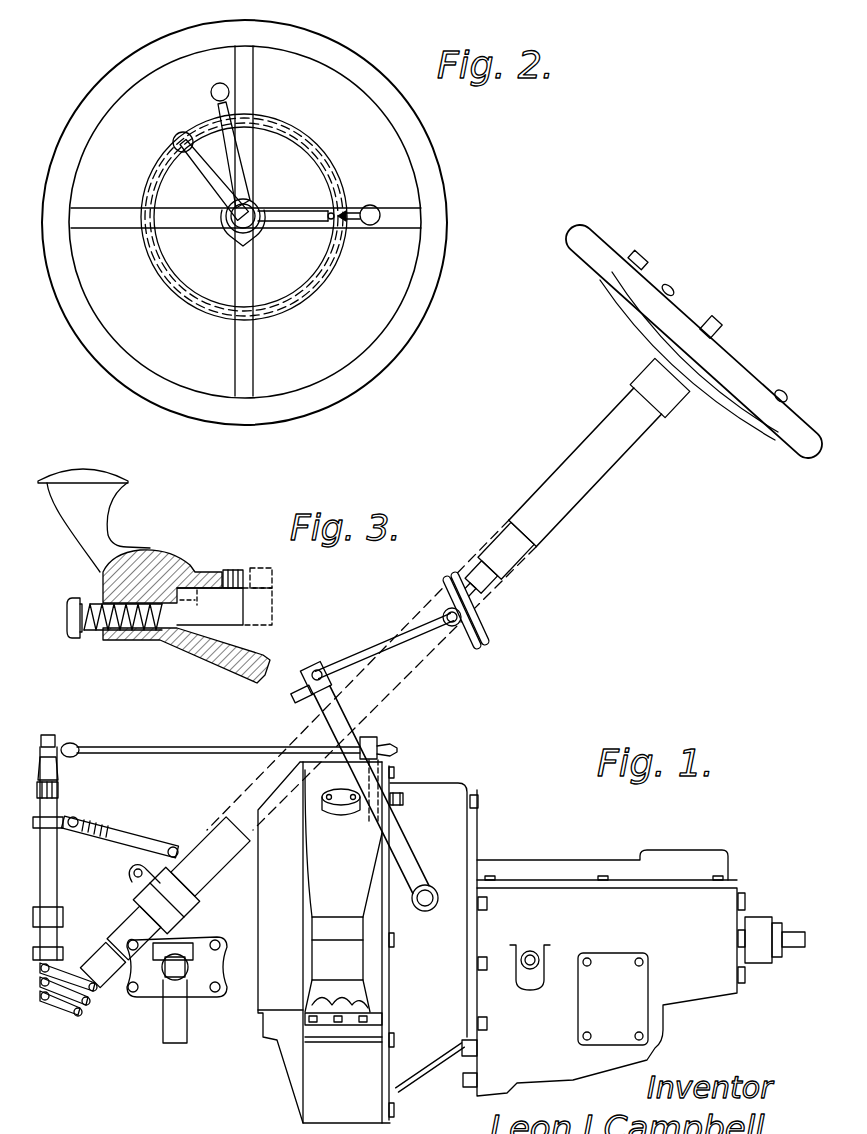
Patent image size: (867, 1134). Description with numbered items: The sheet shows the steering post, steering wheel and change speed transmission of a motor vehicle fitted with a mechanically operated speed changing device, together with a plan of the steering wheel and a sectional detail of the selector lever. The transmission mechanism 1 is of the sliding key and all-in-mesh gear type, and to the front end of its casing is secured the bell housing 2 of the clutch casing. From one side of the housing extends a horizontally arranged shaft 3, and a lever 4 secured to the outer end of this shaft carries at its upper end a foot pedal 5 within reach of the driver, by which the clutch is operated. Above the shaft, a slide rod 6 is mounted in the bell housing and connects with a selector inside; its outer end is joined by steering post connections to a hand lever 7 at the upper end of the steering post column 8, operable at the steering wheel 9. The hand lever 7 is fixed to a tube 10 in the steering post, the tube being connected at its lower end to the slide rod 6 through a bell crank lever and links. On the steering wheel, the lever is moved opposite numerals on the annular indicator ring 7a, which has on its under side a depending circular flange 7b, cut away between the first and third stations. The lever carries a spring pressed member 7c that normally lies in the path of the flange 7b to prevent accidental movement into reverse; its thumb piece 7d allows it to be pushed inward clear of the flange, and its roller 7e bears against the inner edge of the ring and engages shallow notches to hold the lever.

In FIG. 1, the transmission mechanism 1 is at (675, 844).
In FIG. 1, the bell housing 2 is at (453, 782).
In FIG. 2, the shaft 3 is at (288, 233).
In FIG. 1, the shaft 3 is at (428, 911).
In FIG. 1, the lever 4 is at (365, 707).
In FIG. 1, the foot pedal 5 is at (486, 628).
In FIG. 1, the slide rod 6 is at (401, 792).
In FIG. 2, the hand lever 7 is at (369, 204).
In FIG. 3, the hand lever 7 is at (115, 526).
In FIG. 1, the hand lever 7 is at (782, 391).
In FIG. 2, the annular indicator ring 7a is at (193, 300).
In FIG. 3, the annular indicator ring 7a is at (167, 572).
In FIG. 2, the circular flange 7b is at (315, 283).
In FIG. 3, the circular flange 7b is at (157, 647).
In FIG. 3, the spring pressed member 7c is at (244, 608).
In FIG. 3, the thumb piece 7d is at (73, 640).
In FIG. 3, the roller 7e is at (240, 569).
In FIG. 1, the steering post column 8 is at (608, 447).
In FIG. 2, the steering wheel 9 is at (345, 66).
In FIG. 1, the steering wheel 9 is at (776, 446).
In FIG. 1, the tube 10 is at (510, 550).